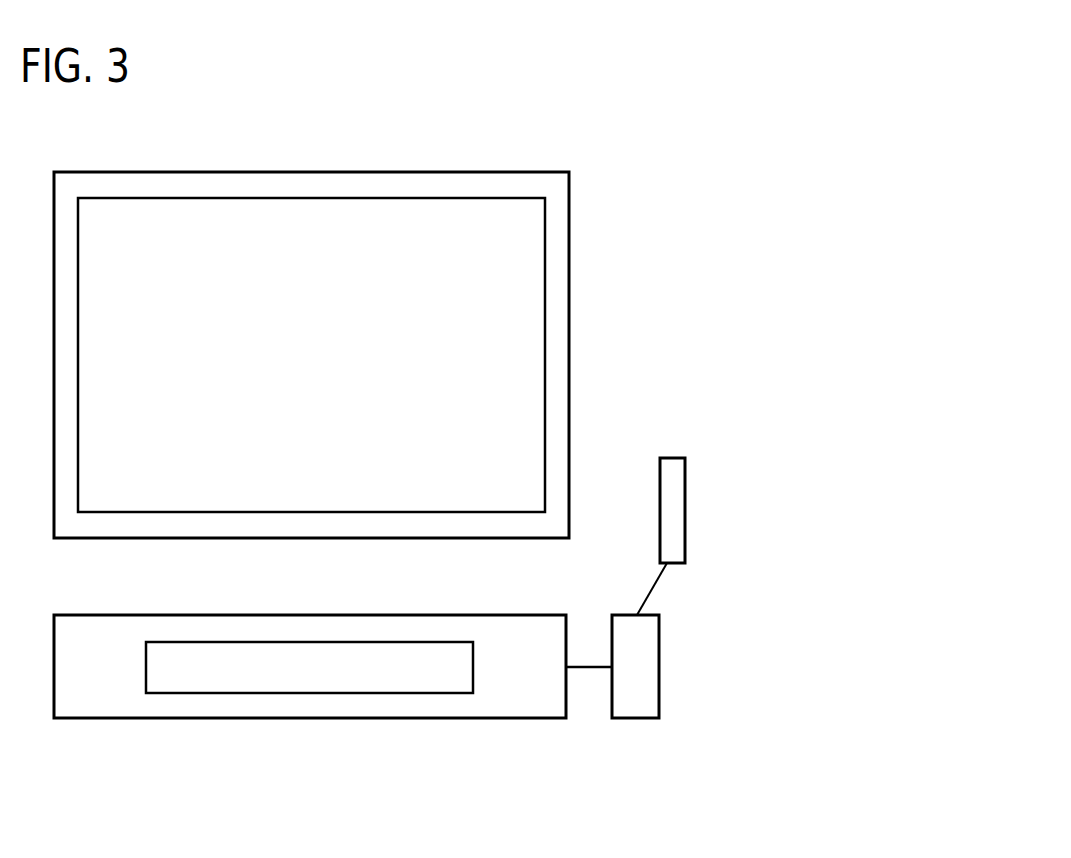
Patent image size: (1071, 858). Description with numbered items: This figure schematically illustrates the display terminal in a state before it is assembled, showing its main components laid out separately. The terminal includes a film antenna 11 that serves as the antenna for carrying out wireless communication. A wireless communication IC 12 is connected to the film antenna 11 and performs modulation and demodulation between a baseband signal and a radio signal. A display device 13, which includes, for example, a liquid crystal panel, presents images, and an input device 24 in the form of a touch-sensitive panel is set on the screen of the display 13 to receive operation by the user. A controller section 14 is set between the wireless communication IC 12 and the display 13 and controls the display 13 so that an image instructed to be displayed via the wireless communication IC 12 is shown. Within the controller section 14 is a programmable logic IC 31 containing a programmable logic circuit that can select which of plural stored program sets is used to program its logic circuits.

The film antenna 11 is at (685, 472).
The wireless communication IC 12 is at (659, 712).
The display device 13 is at (569, 210).
The controller section 14 is at (96, 720).
The input device 24 is at (545, 265).
The programmable logic IC 31 is at (473, 680).